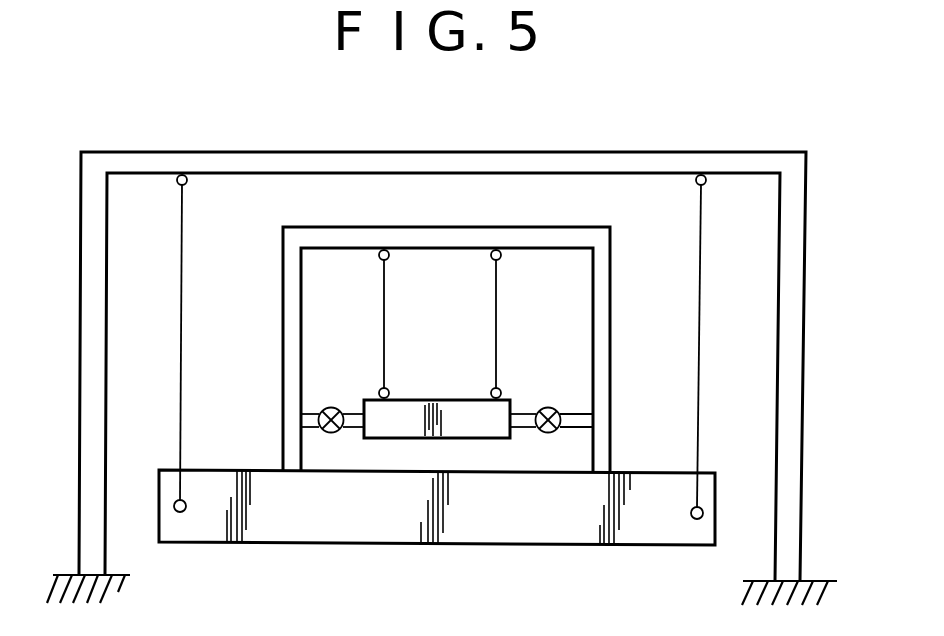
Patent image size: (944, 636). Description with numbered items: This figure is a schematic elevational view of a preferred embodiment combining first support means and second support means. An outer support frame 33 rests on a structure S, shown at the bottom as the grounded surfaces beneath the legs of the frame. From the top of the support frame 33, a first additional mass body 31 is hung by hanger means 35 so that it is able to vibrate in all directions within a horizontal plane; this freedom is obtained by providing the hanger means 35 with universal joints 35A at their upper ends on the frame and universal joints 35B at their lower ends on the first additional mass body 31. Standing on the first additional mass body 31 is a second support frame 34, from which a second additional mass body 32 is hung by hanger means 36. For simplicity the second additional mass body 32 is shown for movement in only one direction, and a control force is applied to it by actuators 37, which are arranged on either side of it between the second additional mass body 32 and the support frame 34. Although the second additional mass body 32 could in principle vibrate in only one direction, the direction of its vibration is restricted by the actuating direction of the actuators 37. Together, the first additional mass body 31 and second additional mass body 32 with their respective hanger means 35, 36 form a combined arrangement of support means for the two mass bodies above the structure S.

The first additional mass body 31 is at (337, 523).
The second additional mass body 32 is at (452, 398).
The support frame 33 is at (350, 152).
The support frame 34 is at (611, 300).
The hanger means 35 is at (183, 275).
The universal joint 35A is at (186, 184).
The universal joint 35B is at (186, 506).
The hanger means 36 is at (383, 312).
The actuator 37 is at (331, 407).
The structure S is at (122, 575).